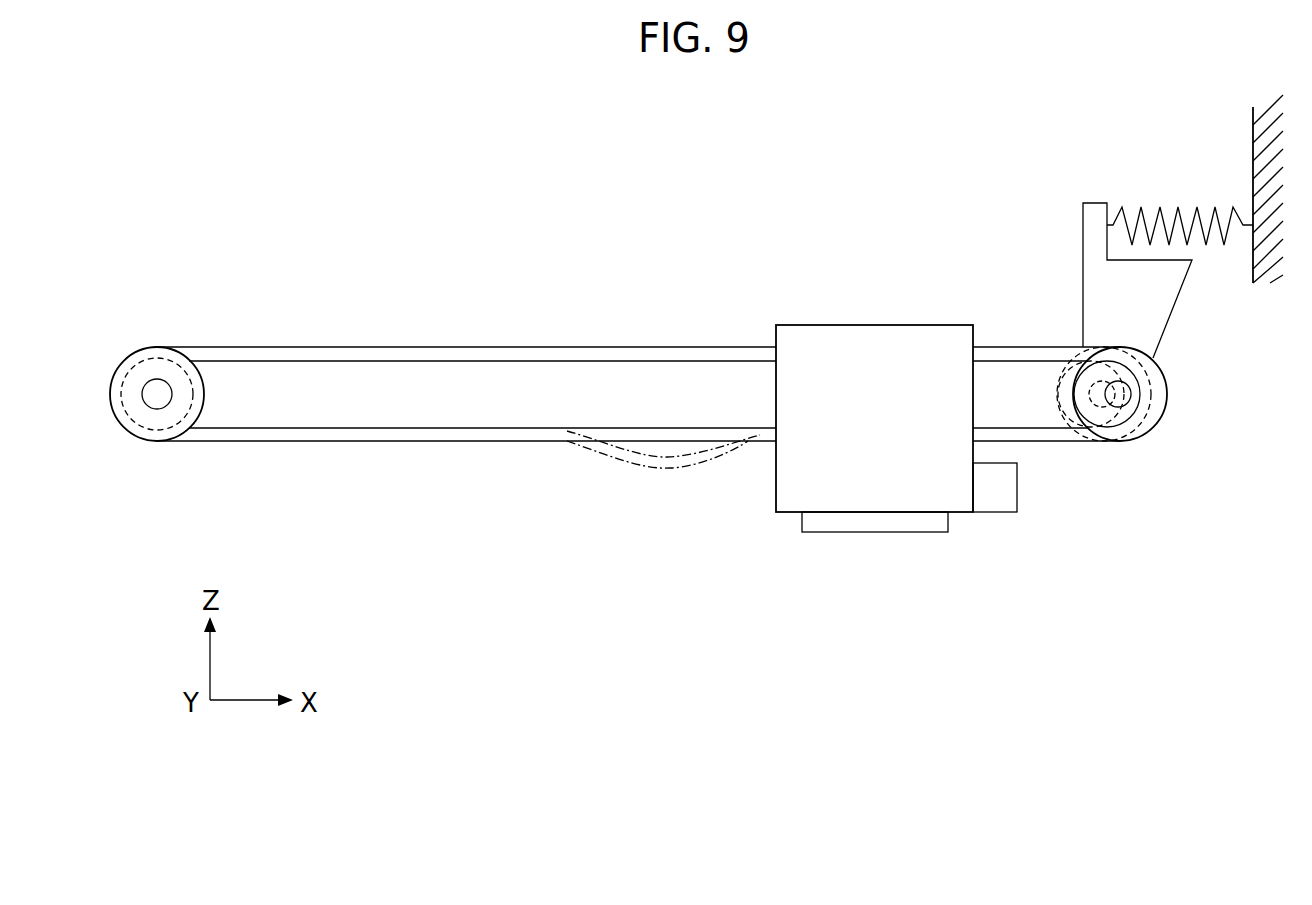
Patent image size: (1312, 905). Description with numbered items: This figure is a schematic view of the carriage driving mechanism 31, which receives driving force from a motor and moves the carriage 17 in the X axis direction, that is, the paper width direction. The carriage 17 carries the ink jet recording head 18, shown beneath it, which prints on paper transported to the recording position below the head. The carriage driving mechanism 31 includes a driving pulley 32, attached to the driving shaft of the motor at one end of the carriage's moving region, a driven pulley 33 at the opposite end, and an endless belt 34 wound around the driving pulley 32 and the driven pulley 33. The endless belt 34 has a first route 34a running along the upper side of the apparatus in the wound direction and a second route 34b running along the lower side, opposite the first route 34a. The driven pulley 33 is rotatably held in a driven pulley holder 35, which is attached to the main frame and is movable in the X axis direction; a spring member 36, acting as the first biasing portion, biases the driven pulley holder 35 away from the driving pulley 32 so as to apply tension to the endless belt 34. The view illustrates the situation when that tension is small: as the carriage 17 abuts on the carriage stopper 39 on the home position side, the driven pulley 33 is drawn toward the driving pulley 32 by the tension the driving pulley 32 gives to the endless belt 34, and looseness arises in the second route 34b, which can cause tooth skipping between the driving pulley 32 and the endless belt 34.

The carriage 17 is at (863, 330).
The ink jet recording head 18 is at (843, 522).
The carriage driving mechanism 31 is at (725, 180).
The driving pulley 32 is at (155, 420).
The driven pulley 33 is at (1150, 420).
The endless belt 34 is at (638, 367).
The first route 34a is at (453, 349).
The second route 34b is at (467, 432).
The driven pulley holder 35 is at (1155, 332).
The spring member 36 is at (1121, 208).
The carriage stopper 39 is at (1008, 497).